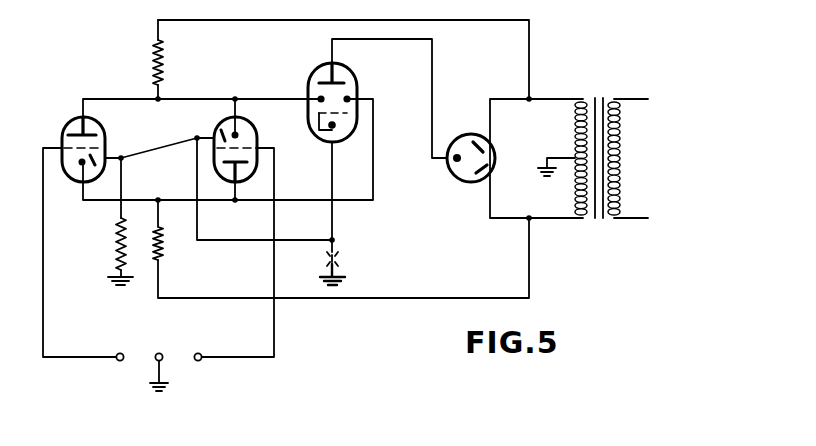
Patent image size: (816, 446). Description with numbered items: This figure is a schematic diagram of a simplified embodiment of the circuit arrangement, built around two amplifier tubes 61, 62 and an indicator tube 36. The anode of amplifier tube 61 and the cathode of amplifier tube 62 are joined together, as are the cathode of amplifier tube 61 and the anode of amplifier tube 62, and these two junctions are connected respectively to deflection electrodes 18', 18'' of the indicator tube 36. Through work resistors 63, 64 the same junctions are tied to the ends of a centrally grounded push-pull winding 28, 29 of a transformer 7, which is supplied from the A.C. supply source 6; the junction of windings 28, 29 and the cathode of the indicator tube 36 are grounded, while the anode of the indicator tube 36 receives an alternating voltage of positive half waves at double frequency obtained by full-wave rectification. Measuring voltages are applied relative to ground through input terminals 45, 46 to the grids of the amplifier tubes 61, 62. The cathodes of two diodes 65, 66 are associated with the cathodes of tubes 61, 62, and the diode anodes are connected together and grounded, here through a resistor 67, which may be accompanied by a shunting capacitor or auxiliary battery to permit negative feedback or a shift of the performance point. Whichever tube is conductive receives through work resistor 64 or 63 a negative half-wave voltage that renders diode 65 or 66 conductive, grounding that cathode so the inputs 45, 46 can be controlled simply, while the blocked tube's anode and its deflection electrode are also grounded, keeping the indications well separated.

The work resistor 63 is at (171, 62).
The amplifier tube 61 is at (67, 142).
The diode 65 is at (94, 168).
The diode 66 is at (222, 129).
The amplifier tube 62 is at (251, 145).
The indicator tube 36 is at (343, 101).
The deflection electrode 18' is at (305, 93).
The deflection electrode 18'' is at (363, 93).
The resistor 67 is at (112, 251).
The work resistor 64 is at (170, 230).
The input terminal 45 is at (117, 368).
The input terminal 46 is at (197, 368).
The push-pull winding 28 is at (567, 130).
The push-pull winding 29 is at (562, 186).
The transformer 7 is at (599, 150).
The A.C. supply source 6 is at (623, 158).